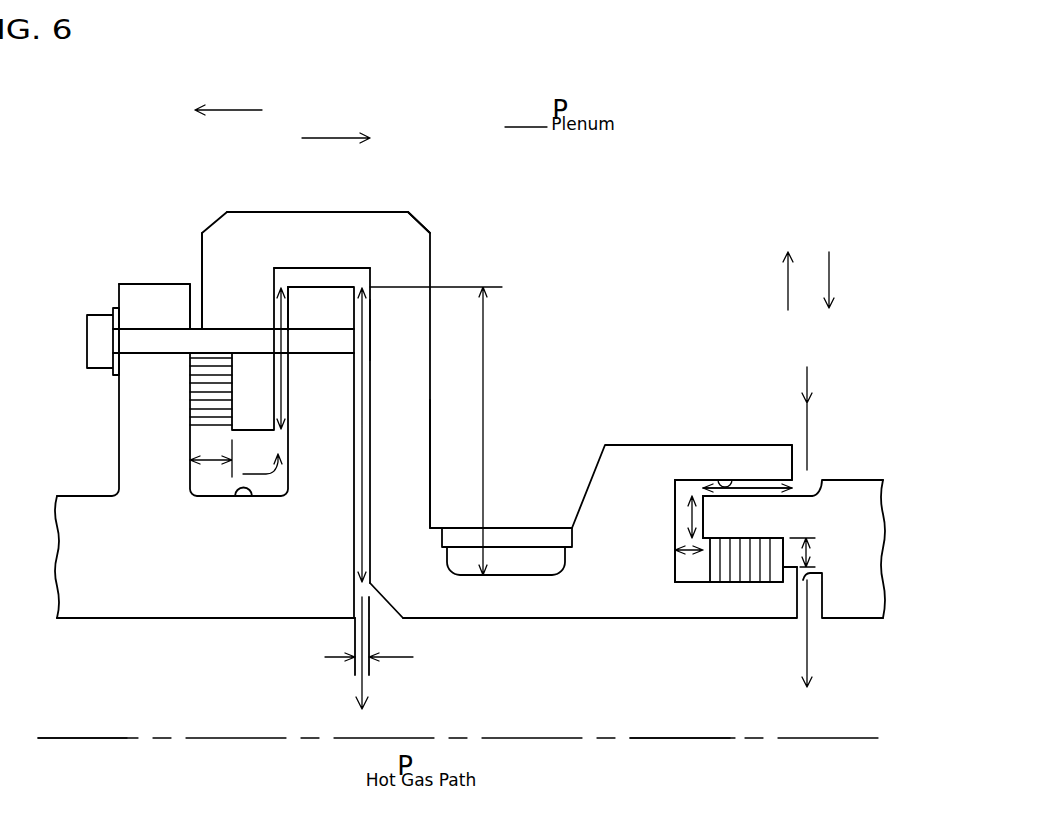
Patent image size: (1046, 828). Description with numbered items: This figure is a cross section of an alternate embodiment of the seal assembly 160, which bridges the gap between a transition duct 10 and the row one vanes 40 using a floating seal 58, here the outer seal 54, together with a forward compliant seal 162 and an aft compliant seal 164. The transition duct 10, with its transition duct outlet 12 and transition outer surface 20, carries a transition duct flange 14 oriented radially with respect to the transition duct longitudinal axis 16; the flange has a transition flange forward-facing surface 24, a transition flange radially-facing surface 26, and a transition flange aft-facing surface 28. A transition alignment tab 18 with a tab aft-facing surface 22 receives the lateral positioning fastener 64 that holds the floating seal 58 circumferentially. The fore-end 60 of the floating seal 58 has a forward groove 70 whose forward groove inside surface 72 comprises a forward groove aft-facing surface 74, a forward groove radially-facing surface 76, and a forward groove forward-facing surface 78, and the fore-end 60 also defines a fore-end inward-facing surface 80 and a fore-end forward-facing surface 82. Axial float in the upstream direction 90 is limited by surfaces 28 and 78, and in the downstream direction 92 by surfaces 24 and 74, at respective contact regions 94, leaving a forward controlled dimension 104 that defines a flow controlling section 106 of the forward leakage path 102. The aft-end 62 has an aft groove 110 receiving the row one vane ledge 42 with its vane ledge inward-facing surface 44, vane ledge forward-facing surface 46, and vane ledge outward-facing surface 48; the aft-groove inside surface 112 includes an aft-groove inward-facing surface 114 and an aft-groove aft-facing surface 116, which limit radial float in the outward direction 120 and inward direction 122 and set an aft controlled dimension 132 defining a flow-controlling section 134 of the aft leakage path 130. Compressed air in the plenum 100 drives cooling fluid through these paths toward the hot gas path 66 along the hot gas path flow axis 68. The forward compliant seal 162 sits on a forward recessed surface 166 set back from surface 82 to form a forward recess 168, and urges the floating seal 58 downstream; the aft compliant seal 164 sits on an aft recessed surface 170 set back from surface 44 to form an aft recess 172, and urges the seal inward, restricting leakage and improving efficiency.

The transition duct 10 is at (75, 556).
The transition duct outlet 12 is at (391, 628).
The transition duct flange 14 is at (306, 506).
The transition duct longitudinal axis 16 is at (215, 739).
The transition alignment tab 18 is at (145, 438).
The transition outer surface 20 is at (82, 495).
The tab aft-facing surface 22 is at (191, 312).
The transition flange forward-facing surface 24 is at (286, 379).
The transition flange radially-facing surface 26 is at (298, 286).
The transition flange aft-facing surface 28 is at (357, 512).
The row one vanes 40 is at (872, 478).
The row one vane ledge 42 is at (883, 549).
The vane ledge inward-facing surface 44 is at (788, 570).
The vane ledge forward-facing surface 46 is at (702, 518).
The vane ledge outward-facing surface 48 is at (775, 497).
The outer seal 54 is at (330, 211).
The floating seal 58 is at (427, 573).
The fore-end 60 is at (272, 211).
The aft-end 62 is at (785, 445).
The lateral positioning fastener 64 is at (87, 341).
The hot gas path 66 is at (580, 726).
The hot gas path flow axis 68 is at (665, 739).
The forward groove 70 is at (343, 278).
The forward groove inside surface 72 is at (366, 303).
The forward groove aft-facing surface 74 is at (276, 266).
The forward groove radially-facing surface 76 is at (334, 268).
The forward groove forward-facing surface 78 is at (371, 334).
The fore-end inward-facing surface 80 is at (266, 432).
The fore-end forward-facing surface 82 is at (202, 262).
The upstream direction 90 is at (244, 110).
The downstream direction 92 is at (319, 138).
The contact region 94 is at (279, 300).
The plenum 100 is at (526, 111).
The forward leakage path 102 is at (270, 477).
The forward controlled dimension 104 is at (392, 658).
The flow controlling section 106 is at (485, 381).
The aft groove 110 is at (686, 558).
The aft-groove inside surface 112 is at (676, 482).
The aft-groove inward-facing surface 114 is at (722, 478).
The aft-groove aft-facing surface 116 is at (690, 499).
The outward direction 120 is at (783, 298).
The inward direction 122 is at (825, 265).
The aft leakage path 130 is at (809, 411).
The aft controlled dimension 132 is at (695, 568).
The flow-controlling section 134 is at (690, 527).
The seal assembly 160 is at (568, 308).
The forward compliant seal 162 is at (213, 395).
The aft compliant seal 164 is at (725, 570).
The forward recessed surface 166 is at (215, 380).
The forward recess 168 is at (213, 464).
The aft recessed surface 170 is at (723, 538).
The aft recess 172 is at (813, 556).